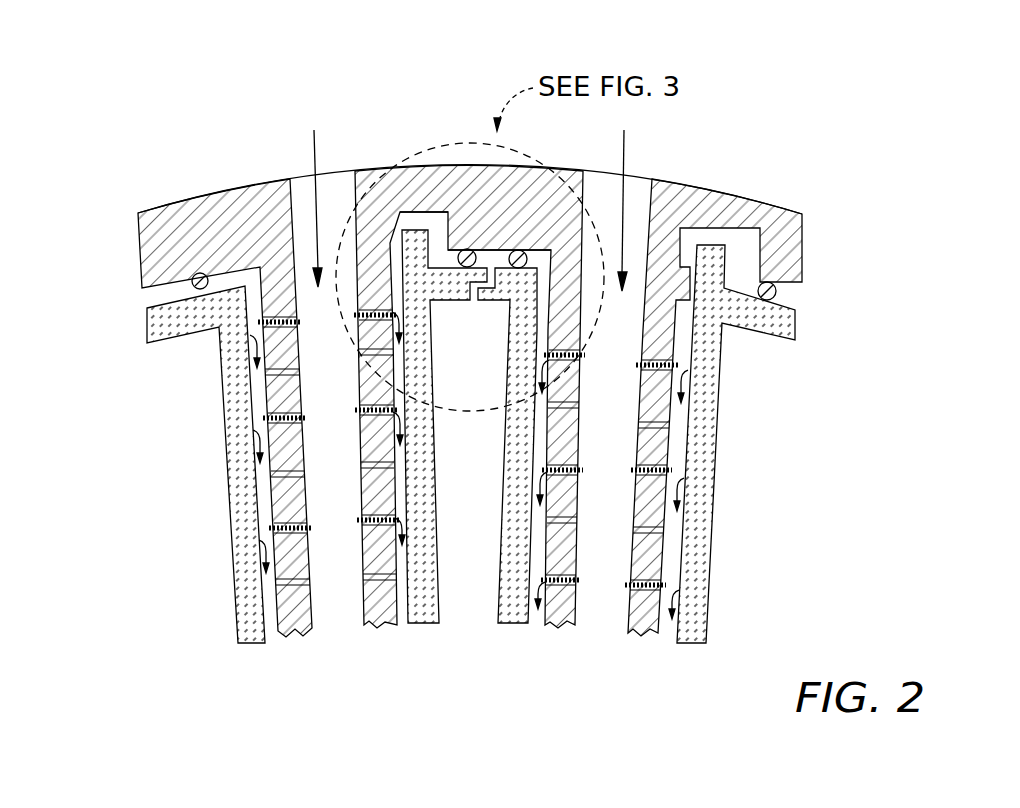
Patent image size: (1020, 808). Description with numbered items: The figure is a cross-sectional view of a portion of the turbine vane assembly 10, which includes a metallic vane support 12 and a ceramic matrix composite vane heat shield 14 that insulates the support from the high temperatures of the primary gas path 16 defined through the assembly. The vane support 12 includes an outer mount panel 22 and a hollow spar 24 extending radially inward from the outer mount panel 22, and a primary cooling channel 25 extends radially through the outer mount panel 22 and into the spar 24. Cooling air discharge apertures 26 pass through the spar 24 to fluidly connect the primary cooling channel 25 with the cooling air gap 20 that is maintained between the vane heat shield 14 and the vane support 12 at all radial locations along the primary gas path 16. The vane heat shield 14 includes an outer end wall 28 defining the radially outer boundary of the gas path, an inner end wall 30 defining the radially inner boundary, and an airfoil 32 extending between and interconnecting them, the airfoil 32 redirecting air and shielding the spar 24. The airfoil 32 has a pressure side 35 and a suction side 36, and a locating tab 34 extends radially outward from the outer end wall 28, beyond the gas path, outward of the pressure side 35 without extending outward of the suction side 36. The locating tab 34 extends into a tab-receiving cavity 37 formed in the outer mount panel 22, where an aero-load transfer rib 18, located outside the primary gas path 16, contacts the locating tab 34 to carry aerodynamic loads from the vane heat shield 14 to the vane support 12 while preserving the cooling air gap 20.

The turbine vane assembly 10 is at (122, 106).
The vane support 12 is at (122, 256).
The vane heat shield 14 is at (198, 352).
The primary gas path 16 is at (177, 500).
The aero-load transfer rib 18 is at (399, 328).
The cooling air gap 20 is at (272, 592).
The outer mount panel 22 is at (772, 213).
The spar 24 is at (262, 395).
The primary cooling channel 25 is at (327, 198).
The cooling air discharge apertures 26 is at (702, 427).
The outer end wall 28 is at (797, 333).
The inner end wall 30 is at (438, 305).
The airfoil 32 is at (740, 500).
The locating tab 34 is at (448, 250).
The pressure side 35 is at (440, 490).
The suction side 36 is at (233, 552).
The tab-receiving cavity 37 is at (425, 222).